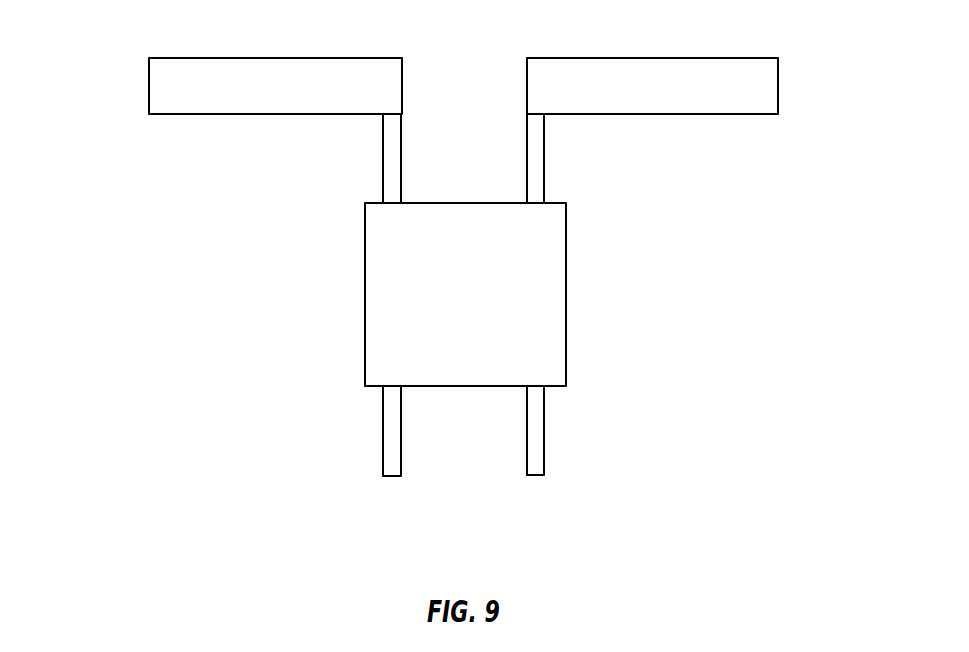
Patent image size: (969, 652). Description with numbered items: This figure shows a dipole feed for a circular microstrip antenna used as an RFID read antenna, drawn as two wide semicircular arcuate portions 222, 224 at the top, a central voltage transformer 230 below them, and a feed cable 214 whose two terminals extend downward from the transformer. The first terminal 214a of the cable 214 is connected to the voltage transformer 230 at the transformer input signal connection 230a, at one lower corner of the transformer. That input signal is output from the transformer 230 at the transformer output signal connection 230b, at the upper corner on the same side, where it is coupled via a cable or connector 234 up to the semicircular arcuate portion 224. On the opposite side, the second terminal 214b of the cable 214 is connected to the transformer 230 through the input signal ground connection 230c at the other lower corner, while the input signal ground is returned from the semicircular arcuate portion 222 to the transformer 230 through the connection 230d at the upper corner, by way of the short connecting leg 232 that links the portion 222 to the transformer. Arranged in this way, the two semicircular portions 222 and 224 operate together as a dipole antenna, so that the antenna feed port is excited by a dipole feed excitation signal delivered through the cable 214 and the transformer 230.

The cable 214 is at (465, 347).
The first terminal of cable 214a is at (591, 437).
The second terminal of cable 214b is at (382, 449).
The semicircular arcuate portion 222 is at (148, 85).
The semicircular arcuate portion 224 is at (779, 85).
The voltage transformer 230 is at (567, 303).
The transformer input signal connection 230a is at (545, 388).
The transformer output signal connection 230b is at (545, 201).
The input signal ground connection 230c is at (382, 388).
The connection 230d is at (382, 201).
The first upper connecting leg 232 is at (382, 163).
The cable or connector 234 is at (545, 170).